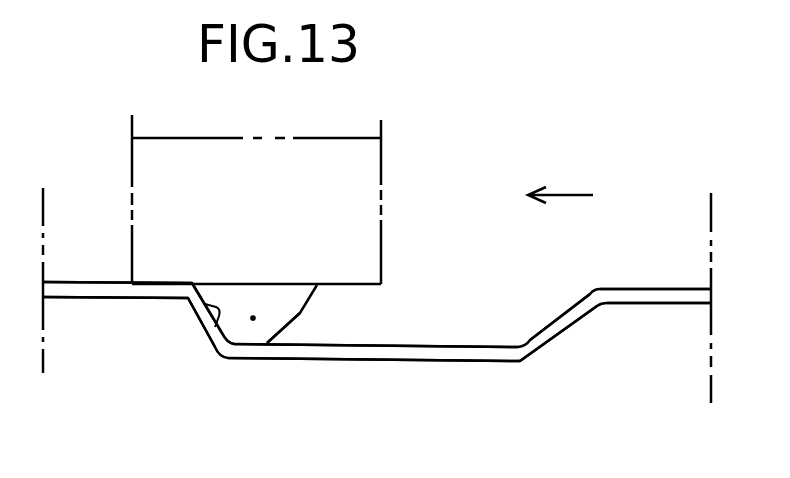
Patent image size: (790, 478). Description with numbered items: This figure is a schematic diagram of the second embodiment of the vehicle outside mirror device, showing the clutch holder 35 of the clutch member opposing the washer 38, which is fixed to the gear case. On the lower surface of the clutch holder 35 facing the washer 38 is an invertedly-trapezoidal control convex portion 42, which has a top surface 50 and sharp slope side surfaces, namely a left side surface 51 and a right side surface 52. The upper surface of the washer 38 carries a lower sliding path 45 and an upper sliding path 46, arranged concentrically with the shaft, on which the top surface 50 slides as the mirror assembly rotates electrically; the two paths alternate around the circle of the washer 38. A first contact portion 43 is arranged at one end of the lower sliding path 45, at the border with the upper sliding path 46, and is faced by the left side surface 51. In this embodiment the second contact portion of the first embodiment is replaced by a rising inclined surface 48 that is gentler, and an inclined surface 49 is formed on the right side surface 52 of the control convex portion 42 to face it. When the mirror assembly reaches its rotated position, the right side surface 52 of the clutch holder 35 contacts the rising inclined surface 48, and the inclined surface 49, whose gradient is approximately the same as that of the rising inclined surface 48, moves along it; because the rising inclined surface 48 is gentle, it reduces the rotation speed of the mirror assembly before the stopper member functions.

The clutch holder 35 is at (381, 160).
The washer 38 is at (520, 362).
The control convex portion 42 is at (253, 318).
The first contact portion 43 is at (203, 327).
The lower sliding path 45 is at (383, 347).
The upper sliding path 46 is at (80, 282).
The rising inclined surface 48 is at (550, 320).
The inclined surface 49 is at (295, 335).
The top surface 50 is at (237, 346).
The left side surface 51 is at (208, 331).
The right side surface 52 is at (317, 293).